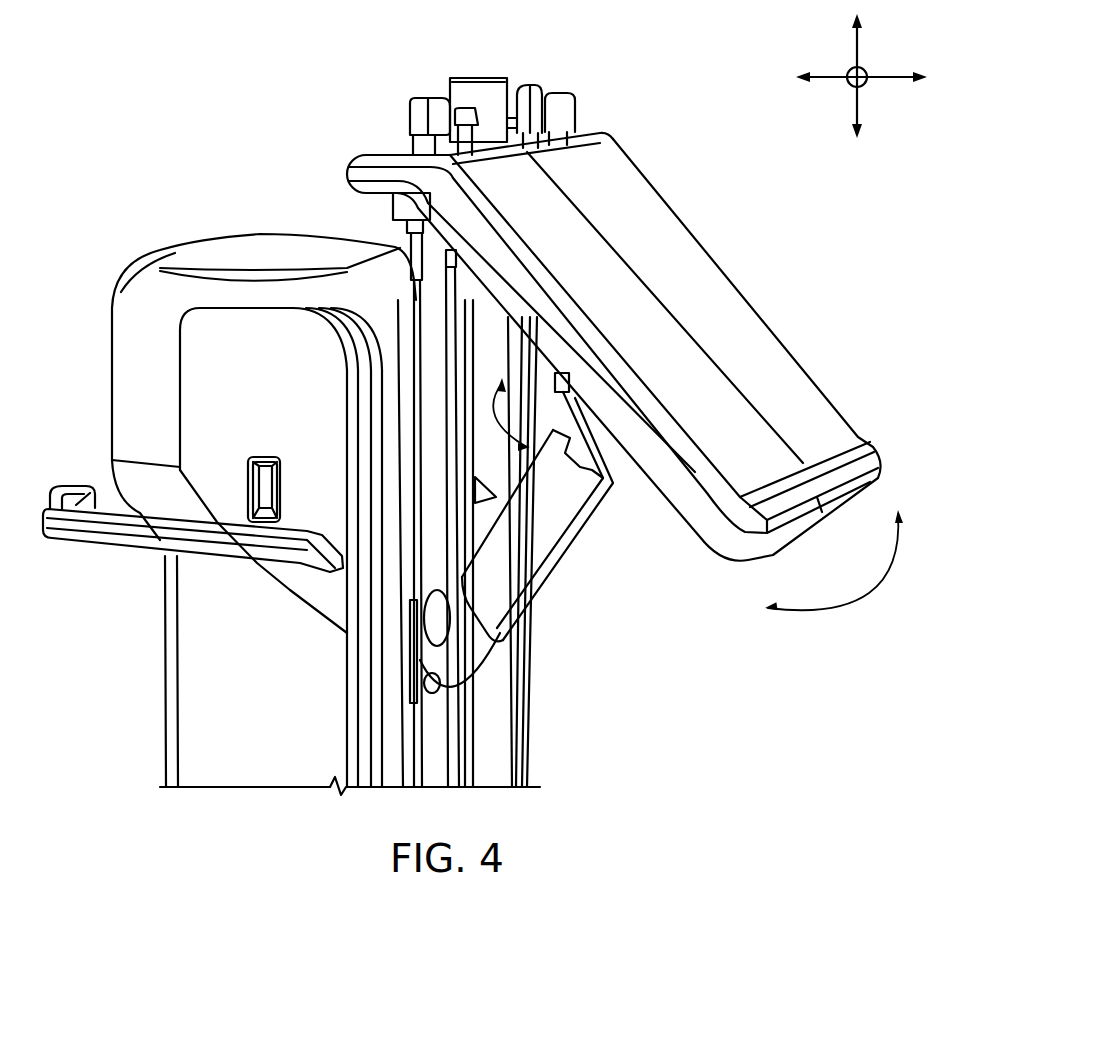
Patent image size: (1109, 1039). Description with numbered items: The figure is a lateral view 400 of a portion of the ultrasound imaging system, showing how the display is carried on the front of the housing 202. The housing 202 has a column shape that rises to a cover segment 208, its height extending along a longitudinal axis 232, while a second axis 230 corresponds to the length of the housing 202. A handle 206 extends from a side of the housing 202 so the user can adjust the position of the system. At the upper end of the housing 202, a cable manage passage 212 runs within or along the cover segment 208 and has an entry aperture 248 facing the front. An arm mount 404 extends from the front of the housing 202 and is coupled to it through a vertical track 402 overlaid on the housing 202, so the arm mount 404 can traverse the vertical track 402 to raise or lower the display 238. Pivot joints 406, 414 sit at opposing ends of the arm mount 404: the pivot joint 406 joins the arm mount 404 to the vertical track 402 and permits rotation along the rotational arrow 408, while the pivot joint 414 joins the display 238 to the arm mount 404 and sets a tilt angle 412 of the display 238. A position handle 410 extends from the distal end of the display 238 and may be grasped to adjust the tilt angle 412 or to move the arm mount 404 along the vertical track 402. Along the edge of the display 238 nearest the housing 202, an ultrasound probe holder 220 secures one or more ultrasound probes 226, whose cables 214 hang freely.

The lateral view 400 is at (178, 183).
The housing 202 is at (190, 708).
The handle 206 is at (216, 560).
The cover segment 208 is at (117, 290).
The cable manage passage 212 is at (297, 325).
The cables 214 is at (340, 450).
The ultrasound probe holder 220 is at (352, 174).
The ultrasound probes 226 is at (400, 92).
The axis 230 is at (835, 75).
The longitudinal axis 232 is at (870, 50).
The display 238 is at (770, 313).
The entry aperture 248 is at (380, 348).
The vertical track 402 is at (428, 453).
The arm mount 404 is at (552, 615).
The pivot joint 406 is at (473, 688).
The rotational arrow 408 is at (868, 598).
The position handle 410 is at (880, 482).
The tilt angle 412 is at (493, 418).
The pivot joint 414 is at (598, 518).